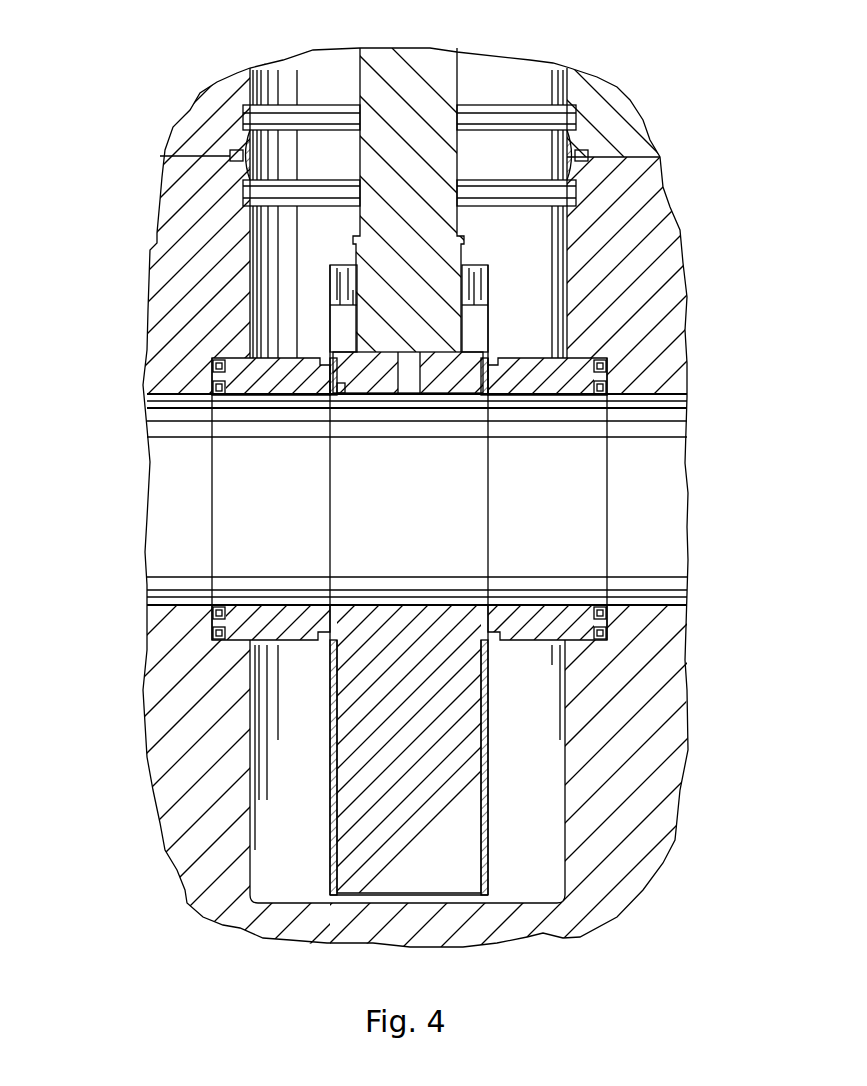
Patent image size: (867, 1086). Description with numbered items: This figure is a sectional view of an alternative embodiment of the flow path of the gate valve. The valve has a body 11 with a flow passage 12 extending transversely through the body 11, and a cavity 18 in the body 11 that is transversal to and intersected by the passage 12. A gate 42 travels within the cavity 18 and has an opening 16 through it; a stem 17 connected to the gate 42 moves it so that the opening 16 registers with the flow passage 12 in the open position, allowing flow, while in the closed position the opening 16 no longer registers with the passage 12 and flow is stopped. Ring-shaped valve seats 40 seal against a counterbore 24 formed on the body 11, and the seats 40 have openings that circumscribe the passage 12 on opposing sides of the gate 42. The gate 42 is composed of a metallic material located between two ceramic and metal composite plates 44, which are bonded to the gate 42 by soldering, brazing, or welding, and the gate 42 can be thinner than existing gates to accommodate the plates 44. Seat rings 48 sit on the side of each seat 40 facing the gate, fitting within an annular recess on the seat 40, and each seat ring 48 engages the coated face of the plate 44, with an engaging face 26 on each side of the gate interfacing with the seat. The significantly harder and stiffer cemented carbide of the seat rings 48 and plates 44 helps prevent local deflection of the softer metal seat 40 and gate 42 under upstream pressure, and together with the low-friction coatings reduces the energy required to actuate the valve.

The body 11 is at (167, 717).
The flow passage 12 is at (163, 603).
The opening 16 is at (378, 603).
The stem 17 is at (435, 78).
The cavity 18 is at (540, 318).
The counterbore 24 is at (218, 628).
The engaging face 26 is at (487, 707).
The valve seat 40 is at (290, 356).
The gate 42 is at (447, 843).
The plate 44 is at (330, 355).
The seat ring 48 is at (340, 380).